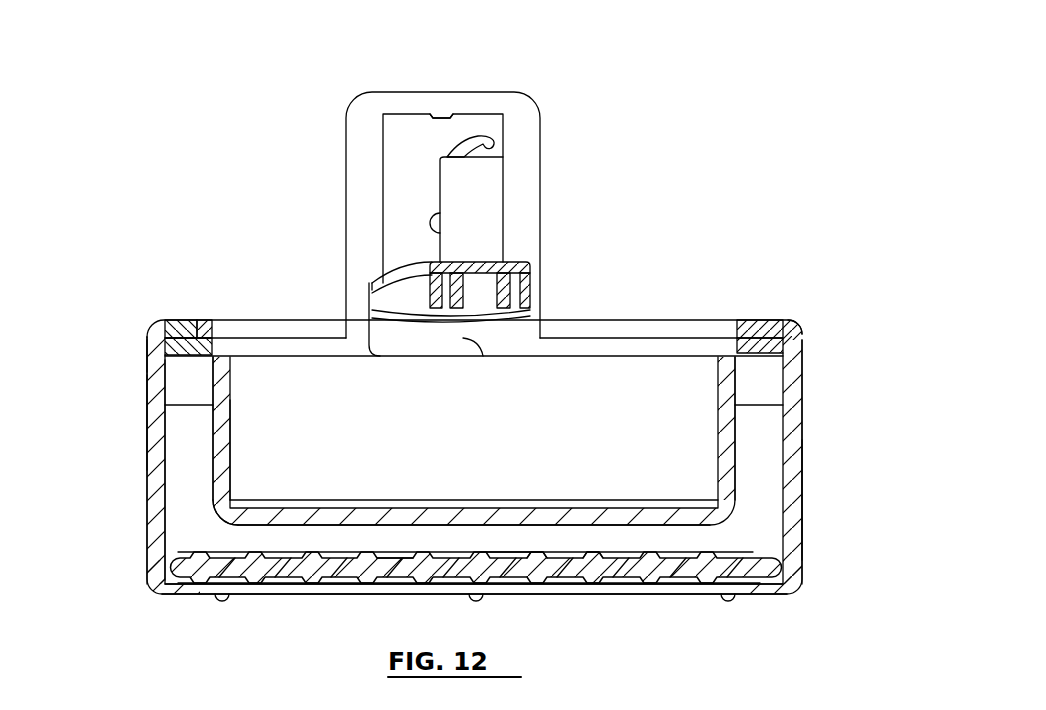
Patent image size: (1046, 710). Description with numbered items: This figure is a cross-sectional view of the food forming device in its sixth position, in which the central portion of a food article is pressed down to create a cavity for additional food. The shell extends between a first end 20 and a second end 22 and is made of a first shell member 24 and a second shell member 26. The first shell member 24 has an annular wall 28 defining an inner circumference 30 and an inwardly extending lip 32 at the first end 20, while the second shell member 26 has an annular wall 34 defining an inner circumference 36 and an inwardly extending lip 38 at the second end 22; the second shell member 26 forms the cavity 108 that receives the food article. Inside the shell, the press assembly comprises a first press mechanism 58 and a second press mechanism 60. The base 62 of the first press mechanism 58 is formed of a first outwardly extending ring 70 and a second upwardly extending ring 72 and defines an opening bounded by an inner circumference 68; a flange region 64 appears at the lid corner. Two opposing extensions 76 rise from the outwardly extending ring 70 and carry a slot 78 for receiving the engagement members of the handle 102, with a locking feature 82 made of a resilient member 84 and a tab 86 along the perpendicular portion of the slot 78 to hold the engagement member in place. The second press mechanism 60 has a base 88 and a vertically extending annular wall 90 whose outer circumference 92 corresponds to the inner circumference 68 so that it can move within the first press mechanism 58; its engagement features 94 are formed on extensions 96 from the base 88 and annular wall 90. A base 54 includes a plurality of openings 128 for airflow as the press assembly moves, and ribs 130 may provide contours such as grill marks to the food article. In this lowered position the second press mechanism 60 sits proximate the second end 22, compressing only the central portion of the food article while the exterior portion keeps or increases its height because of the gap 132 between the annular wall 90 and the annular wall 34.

The first end 20 is at (803, 318).
The second end 22 is at (789, 591).
The first shell member 24 is at (797, 377).
The second shell member 26 is at (801, 486).
The annular wall 28 is at (160, 388).
The inner circumference 30 is at (163, 372).
The inwardly extending lip 32 is at (170, 324).
The annular wall 34 is at (153, 473).
The inner circumference 36 is at (168, 446).
The inwardly extending lip 38 is at (186, 594).
The base 54 is at (272, 567).
The first press mechanism 58 is at (778, 347).
The second press mechanism 60 is at (727, 437).
The base 62 is at (265, 350).
The lid flange 64 is at (153, 345).
The inner circumference 68 is at (214, 346).
The first outwardly extending ring 70 is at (193, 358).
The second upwardly extending ring 72 is at (206, 326).
The extensions 76 is at (487, 192).
The slot 78 is at (440, 233).
The locking feature 82 is at (534, 100).
The resilient member 84 is at (486, 138).
The tab 86 is at (447, 112).
The base 88 is at (464, 522).
The annular wall 90 is at (223, 446).
The outer circumference 92 is at (212, 493).
The engagement features 94 is at (371, 284).
The extensions 96 is at (435, 337).
The handle 102 is at (500, 262).
The cavity 108 is at (516, 539).
The openings 128 is at (400, 565).
The ribs 130 is at (596, 556).
The gap 132 is at (766, 470).